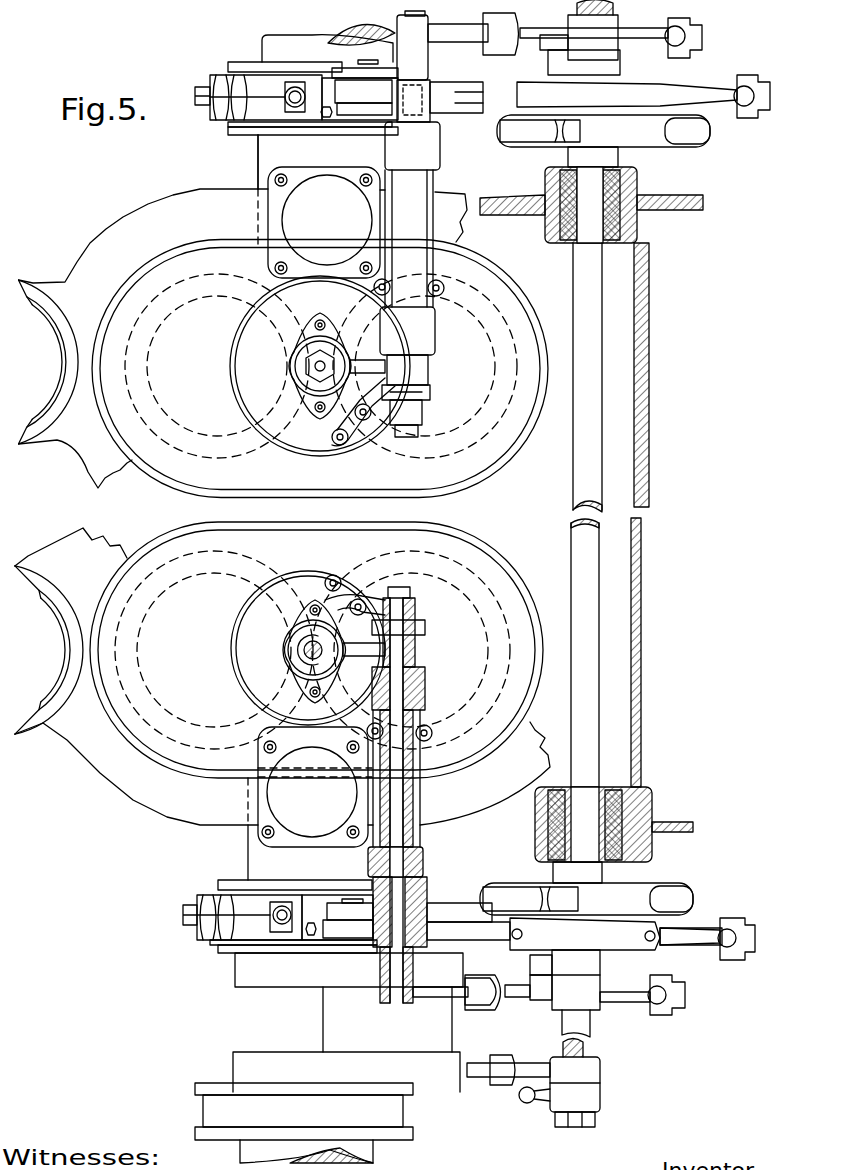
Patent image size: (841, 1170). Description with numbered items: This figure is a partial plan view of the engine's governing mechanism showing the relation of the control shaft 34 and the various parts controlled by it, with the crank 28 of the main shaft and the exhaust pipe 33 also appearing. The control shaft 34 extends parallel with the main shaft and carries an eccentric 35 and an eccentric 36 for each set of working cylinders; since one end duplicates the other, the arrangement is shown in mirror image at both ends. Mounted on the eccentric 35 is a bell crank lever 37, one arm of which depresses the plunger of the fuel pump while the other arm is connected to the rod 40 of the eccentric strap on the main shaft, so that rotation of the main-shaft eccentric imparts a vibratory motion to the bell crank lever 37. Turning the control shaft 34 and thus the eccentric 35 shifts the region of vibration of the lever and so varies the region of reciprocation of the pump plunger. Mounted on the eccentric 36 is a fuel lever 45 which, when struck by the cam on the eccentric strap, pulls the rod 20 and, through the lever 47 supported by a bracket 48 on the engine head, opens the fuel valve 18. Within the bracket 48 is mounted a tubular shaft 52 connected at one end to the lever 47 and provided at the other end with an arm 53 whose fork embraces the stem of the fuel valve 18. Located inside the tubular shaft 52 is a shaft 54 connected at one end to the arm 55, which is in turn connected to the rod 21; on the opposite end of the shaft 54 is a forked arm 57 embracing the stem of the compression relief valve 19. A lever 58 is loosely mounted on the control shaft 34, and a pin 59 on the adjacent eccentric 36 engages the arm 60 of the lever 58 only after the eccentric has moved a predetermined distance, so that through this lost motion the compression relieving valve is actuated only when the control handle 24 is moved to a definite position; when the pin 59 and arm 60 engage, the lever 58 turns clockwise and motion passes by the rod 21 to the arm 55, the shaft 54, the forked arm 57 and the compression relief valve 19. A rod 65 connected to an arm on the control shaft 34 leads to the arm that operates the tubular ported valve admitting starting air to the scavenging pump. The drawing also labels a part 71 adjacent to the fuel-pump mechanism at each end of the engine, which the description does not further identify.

The fuel valve 18 is at (314, 366).
The compression relief valve 19 is at (380, 420).
The pull rod 20 is at (710, 95).
The rod 21 is at (647, 38).
The control handle 24 is at (526, 1103).
The crank 28 is at (263, 155).
The exhaust pipe 33 is at (30, 425).
The control shaft 34 is at (595, 606).
The eccentric 35 is at (510, 145).
The eccentric 36 is at (667, 80).
The bell crank lever 37 is at (645, 134).
The rod 40 is at (452, 912).
The fuel lever 45 is at (466, 83).
The lever 47 is at (455, 96).
The bracket 48 is at (440, 153).
The tubular shaft 52 is at (420, 803).
The arm 53 is at (363, 362).
The shaft 54 is at (405, 16).
The arm 55 is at (452, 32).
The forked arm 57 is at (393, 426).
The lever 58 is at (565, 1000).
The pin 59 is at (535, 973).
The arm 60 is at (530, 1000).
The rod 65 is at (479, 1078).
The block 71 is at (372, 88).